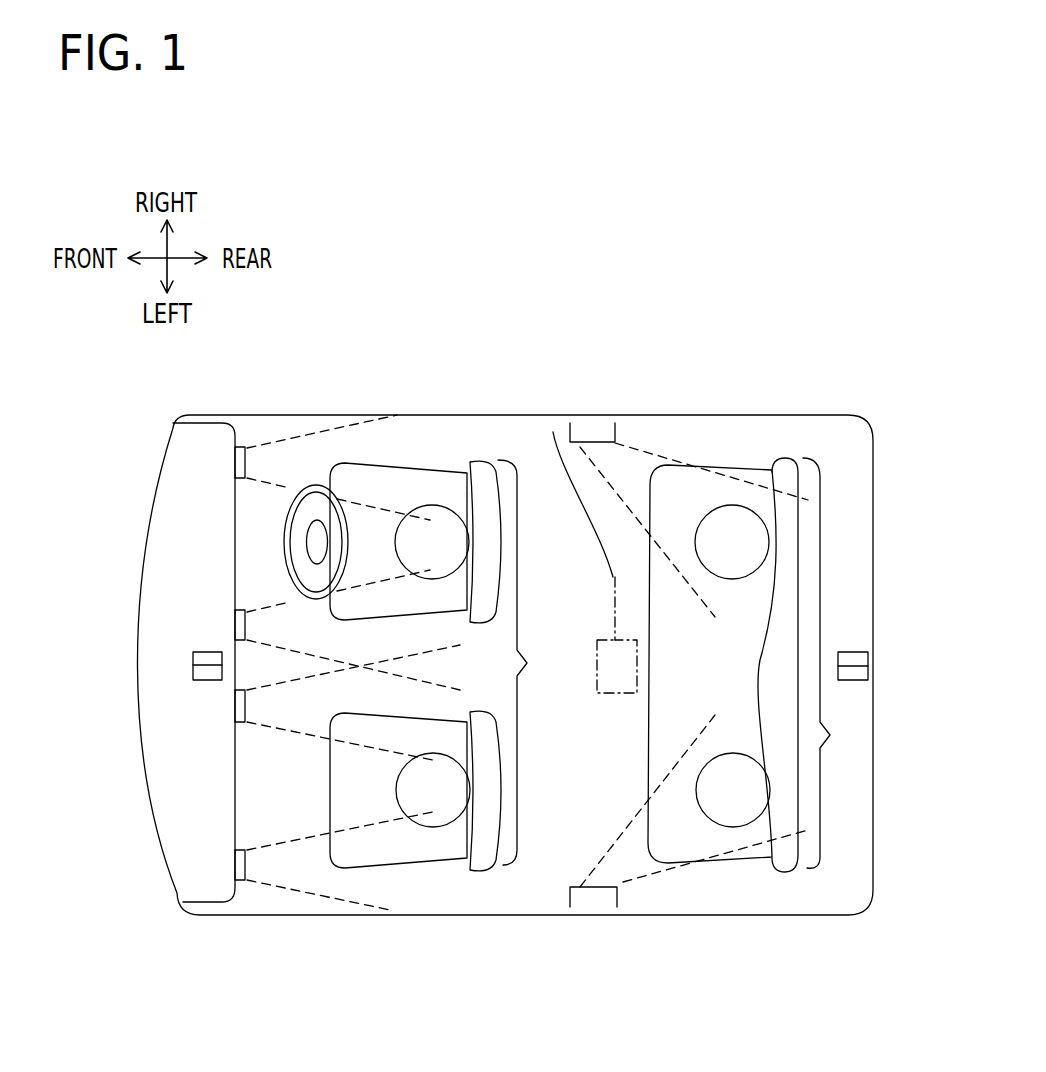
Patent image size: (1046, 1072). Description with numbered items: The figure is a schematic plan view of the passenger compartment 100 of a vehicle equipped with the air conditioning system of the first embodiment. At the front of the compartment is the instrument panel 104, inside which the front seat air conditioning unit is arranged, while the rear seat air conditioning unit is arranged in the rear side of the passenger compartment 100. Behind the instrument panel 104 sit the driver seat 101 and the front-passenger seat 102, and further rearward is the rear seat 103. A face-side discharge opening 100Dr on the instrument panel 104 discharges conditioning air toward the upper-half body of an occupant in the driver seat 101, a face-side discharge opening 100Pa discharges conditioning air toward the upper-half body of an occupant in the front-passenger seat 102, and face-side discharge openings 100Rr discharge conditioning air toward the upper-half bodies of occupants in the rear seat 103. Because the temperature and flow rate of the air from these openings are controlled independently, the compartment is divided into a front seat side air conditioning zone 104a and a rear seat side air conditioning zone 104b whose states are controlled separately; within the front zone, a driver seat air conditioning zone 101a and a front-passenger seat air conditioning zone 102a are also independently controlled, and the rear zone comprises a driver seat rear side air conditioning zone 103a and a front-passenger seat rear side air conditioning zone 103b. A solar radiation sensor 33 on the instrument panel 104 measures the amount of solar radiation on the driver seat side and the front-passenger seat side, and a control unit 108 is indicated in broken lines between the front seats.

The passenger compartment 100 is at (518, 895).
The face-side discharge opening 100Dr is at (245, 462).
The face-side discharge opening 100Pa is at (247, 712).
The face-side discharge openings 100Rr is at (593, 442).
The driver seat 101 is at (417, 468).
The driver seat air conditioning zone 101a is at (427, 501).
The front-passenger seat 102 is at (412, 862).
The front-passenger seat air conditioning zone 102a is at (395, 806).
The rear seat 103 is at (739, 468).
The driver seat rear side air conditioning zone 103a is at (730, 500).
The front-passenger seat rear side air conditioning zone 103b is at (730, 851).
The instrument panel 104 is at (163, 702).
The front seat side air conditioning zone 104a is at (546, 662).
The rear seat side air conditioning zone 104b is at (851, 663).
The control unit 108 is at (551, 425).
The solar radiation sensor 33 is at (193, 655).